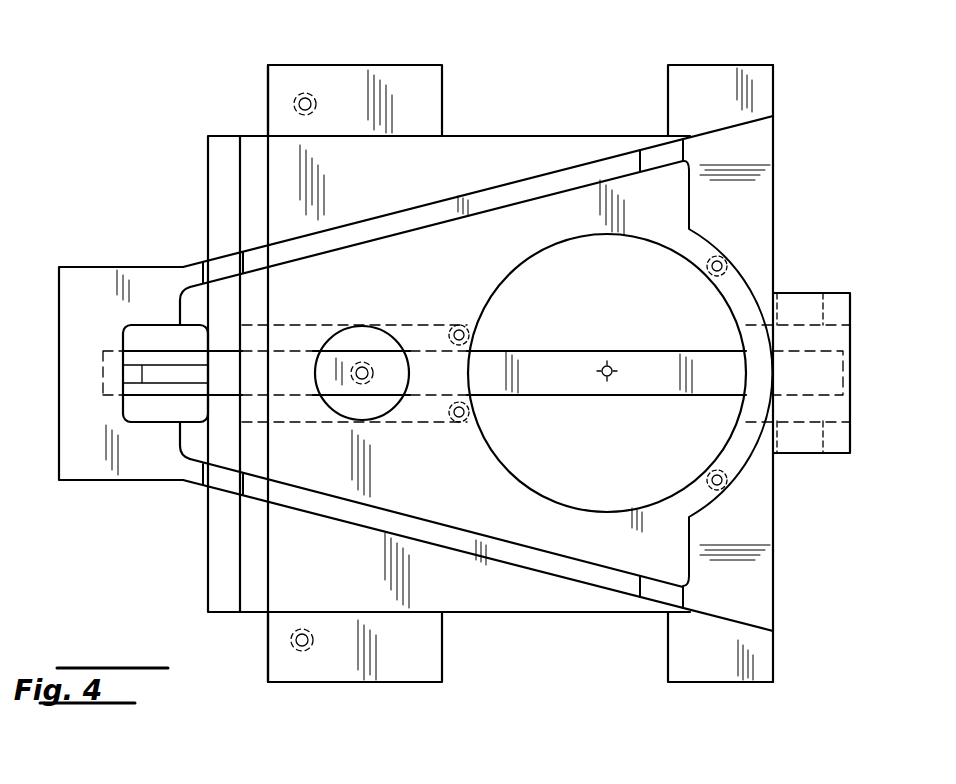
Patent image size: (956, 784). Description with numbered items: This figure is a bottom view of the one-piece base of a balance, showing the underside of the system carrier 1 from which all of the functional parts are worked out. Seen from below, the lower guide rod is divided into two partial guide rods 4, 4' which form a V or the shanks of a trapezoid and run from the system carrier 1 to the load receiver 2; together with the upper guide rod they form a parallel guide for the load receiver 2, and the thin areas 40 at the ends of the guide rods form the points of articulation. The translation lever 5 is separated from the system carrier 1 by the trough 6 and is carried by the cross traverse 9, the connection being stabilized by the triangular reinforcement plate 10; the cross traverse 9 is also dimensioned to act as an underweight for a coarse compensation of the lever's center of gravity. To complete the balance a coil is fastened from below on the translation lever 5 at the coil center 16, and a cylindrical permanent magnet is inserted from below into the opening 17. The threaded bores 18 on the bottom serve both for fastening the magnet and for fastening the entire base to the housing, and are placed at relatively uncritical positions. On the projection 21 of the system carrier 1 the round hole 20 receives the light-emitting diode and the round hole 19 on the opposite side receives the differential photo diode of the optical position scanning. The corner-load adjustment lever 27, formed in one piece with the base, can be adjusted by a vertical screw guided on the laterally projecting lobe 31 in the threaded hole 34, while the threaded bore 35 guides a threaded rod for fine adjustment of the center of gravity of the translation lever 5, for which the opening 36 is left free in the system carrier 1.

The system carrier 1 is at (492, 160).
The load receiver 2 is at (85, 304).
The lower partial guide rod 4 is at (478, 182).
The lower partial guide rod 4' is at (478, 568).
The translation lever 5 is at (565, 380).
The trough 6 is at (122, 267).
The cross traverse 9 is at (223, 170).
The triangular reinforcement plate 10 is at (162, 378).
The coil center 16 is at (603, 364).
The opening 17 is at (532, 282).
The threaded bores 18 is at (458, 326).
The round hole 19 is at (799, 305).
The round hole 20 is at (804, 455).
The projection 21 is at (835, 437).
The corner-load adjustment lever 27 is at (705, 83).
The laterally projecting lobe 31 is at (392, 82).
The threaded hole 34 is at (303, 96).
The threaded bore 35 is at (353, 382).
The opening 36 is at (370, 340).
The thin area 40 is at (652, 150).